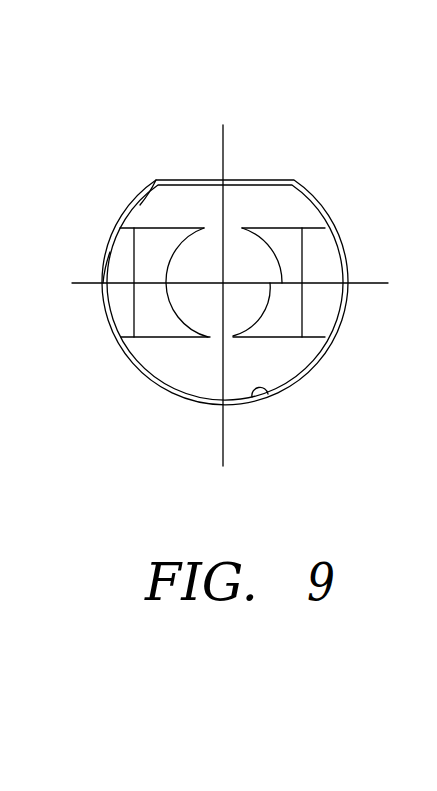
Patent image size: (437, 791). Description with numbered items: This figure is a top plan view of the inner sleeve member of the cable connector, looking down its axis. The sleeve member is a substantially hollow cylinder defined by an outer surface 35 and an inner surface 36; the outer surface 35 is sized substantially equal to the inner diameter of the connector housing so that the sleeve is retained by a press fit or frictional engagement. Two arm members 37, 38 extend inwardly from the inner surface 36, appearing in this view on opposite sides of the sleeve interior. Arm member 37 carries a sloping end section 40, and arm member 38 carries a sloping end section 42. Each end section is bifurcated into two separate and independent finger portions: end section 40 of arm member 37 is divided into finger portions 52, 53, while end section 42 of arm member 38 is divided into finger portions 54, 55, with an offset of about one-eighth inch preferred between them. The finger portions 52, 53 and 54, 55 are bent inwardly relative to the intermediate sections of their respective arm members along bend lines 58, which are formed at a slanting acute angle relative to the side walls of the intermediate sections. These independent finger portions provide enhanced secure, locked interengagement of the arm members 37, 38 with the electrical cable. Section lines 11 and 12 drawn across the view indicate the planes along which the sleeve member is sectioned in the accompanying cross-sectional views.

The section line 11- 11 is at (72, 283).
The section line 12- 12 is at (223, 125).
The outer surface 35 is at (305, 188).
The inner surface 36 is at (270, 396).
The arm member 37 is at (321, 266).
The arm member 38 is at (122, 268).
The end section 40 is at (285, 226).
The end section 42 is at (155, 242).
The finger portion 52 is at (258, 228).
The finger portion 53 is at (288, 313).
The finger portion 54 is at (167, 320).
The finger portion 55 is at (170, 238).
The bend line 58 is at (127, 250).